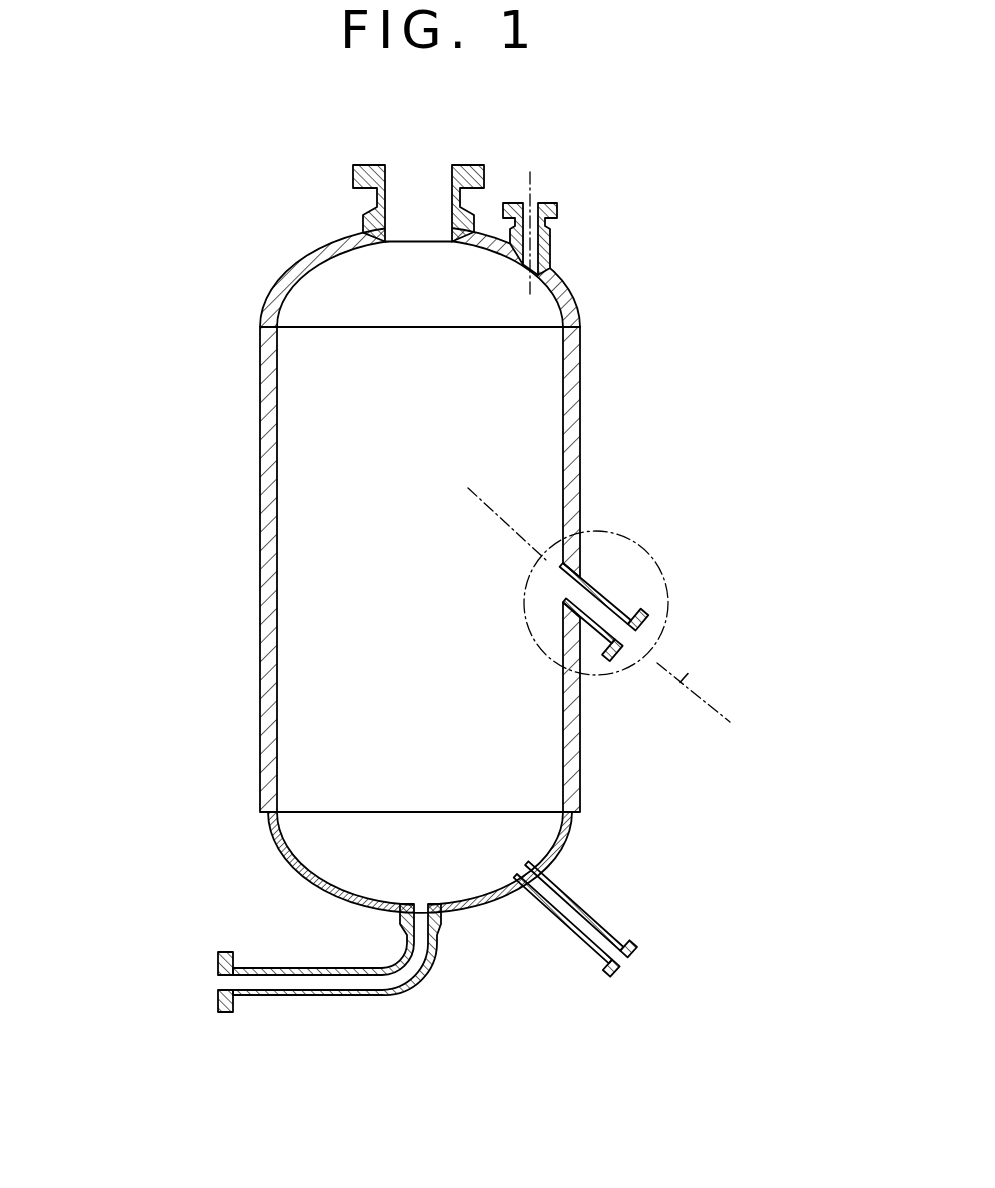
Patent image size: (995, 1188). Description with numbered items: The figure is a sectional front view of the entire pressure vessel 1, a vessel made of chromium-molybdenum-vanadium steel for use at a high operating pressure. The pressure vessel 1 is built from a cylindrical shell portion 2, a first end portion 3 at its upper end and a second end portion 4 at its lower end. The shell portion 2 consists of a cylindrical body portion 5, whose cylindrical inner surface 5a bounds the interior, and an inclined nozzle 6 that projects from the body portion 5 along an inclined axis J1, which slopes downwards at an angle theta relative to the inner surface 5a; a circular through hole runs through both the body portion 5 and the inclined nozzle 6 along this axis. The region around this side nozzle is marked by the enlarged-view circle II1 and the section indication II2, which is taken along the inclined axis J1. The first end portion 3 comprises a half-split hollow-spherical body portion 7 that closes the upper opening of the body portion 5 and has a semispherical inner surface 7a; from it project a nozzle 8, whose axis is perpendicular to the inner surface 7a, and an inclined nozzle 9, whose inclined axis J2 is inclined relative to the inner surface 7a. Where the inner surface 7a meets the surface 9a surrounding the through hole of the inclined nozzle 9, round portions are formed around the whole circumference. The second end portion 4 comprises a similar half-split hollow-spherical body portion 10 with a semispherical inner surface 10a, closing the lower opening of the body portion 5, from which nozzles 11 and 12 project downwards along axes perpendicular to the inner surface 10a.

The pressure vessel 1 is at (144, 299).
The cylindrical shell portion 2 is at (248, 570).
The first end portion 3 is at (254, 300).
The second end portion 4 is at (270, 852).
The cylindrical body portion 5 is at (582, 408).
The inner surface of the body portion 5a is at (566, 358).
The inclined nozzle 6 is at (615, 594).
The body portion of the first end portion 7 is at (570, 298).
The semispherical inner surface 7a is at (306, 271).
The nozzle 8 is at (475, 163).
The inclined nozzle 9 is at (556, 203).
The surface surrounding the through hole 9a is at (540, 247).
The body portion of the second end portion 10 is at (568, 836).
The semispherical inner surface 10a is at (330, 888).
The nozzle 11 is at (437, 963).
The nozzle 12 is at (598, 912).
The inclined axis J1 is at (686, 676).
The inclined axis J2 is at (540, 175).
The enlarged view region II1 is at (652, 559).
The section line II2 is at (470, 484).